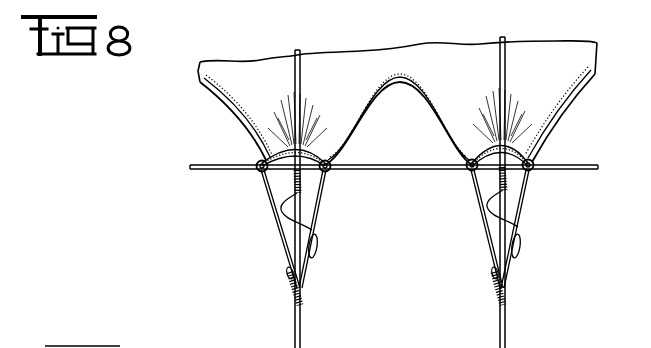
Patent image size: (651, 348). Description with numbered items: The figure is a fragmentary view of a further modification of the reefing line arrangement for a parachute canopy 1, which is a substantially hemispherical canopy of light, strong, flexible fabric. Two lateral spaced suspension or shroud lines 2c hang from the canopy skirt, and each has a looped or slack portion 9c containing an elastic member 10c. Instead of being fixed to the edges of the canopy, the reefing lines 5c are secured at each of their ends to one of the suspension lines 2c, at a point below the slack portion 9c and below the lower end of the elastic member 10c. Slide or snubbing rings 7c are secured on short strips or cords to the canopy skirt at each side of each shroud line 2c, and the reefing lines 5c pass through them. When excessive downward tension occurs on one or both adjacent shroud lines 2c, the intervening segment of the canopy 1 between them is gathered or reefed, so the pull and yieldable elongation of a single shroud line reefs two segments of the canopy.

The parachute canopy 1 is at (430, 88).
The suspension line 2c is at (300, 70).
The reefing line 5c is at (389, 170).
The snubbing ring 7c is at (259, 172).
The slack portion 9c is at (317, 244).
The elastic member 10c is at (299, 209).